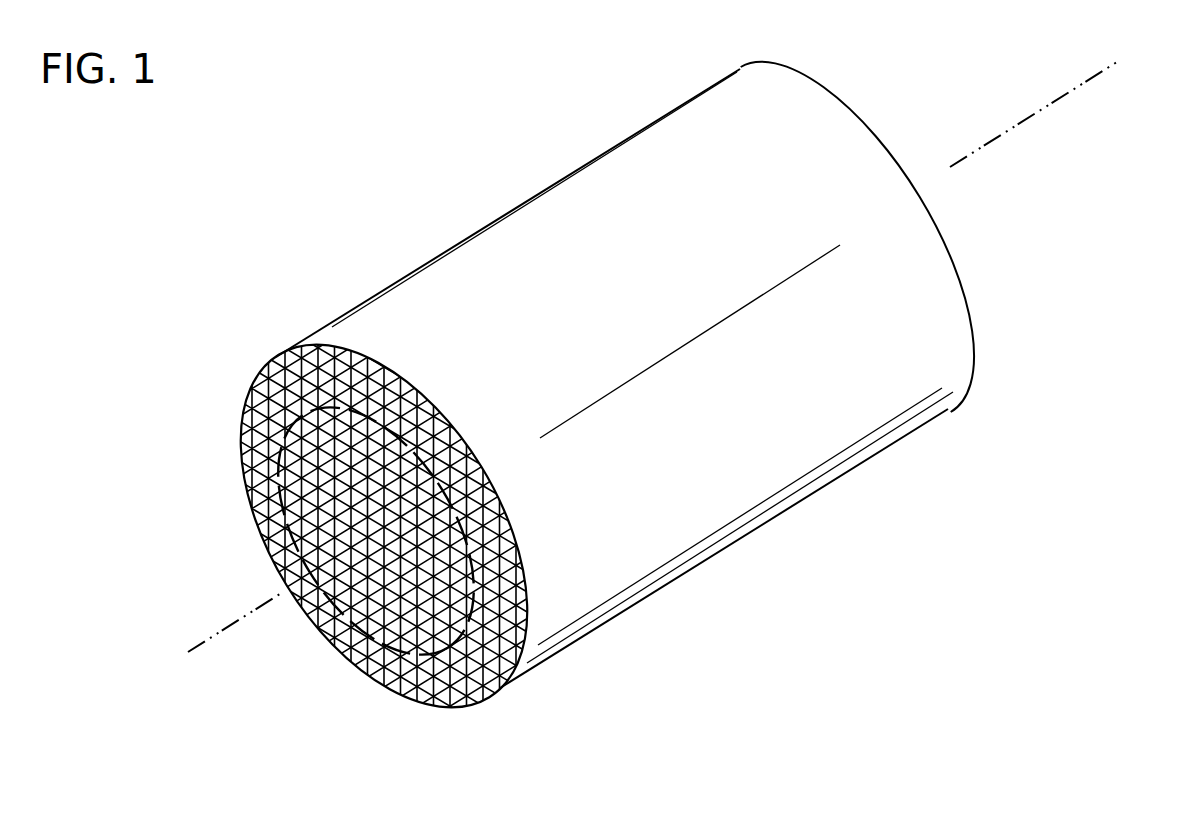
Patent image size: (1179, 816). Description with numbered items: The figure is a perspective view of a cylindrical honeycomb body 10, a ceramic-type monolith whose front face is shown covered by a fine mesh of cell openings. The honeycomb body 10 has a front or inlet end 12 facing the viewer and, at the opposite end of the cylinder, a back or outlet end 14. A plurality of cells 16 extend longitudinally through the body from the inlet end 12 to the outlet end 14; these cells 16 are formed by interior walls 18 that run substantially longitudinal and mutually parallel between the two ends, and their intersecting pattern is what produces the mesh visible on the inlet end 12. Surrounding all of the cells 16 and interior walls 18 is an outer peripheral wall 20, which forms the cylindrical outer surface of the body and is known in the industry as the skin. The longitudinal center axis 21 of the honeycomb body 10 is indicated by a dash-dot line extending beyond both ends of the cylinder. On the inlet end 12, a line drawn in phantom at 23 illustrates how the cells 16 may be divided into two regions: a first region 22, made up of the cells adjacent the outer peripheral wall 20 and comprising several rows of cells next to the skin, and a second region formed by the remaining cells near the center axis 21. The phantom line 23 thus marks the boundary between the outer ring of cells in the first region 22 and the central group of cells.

The honeycomb body 10 is at (647, 433).
The inlet end 12 is at (355, 482).
The outlet end 14 is at (863, 107).
The cells 16 is at (278, 502).
The interior walls 18 is at (288, 540).
The outer peripheral wall 20 is at (543, 240).
The center axis 21 is at (226, 632).
The first region 22 is at (505, 677).
The phantom line 23 is at (430, 703).